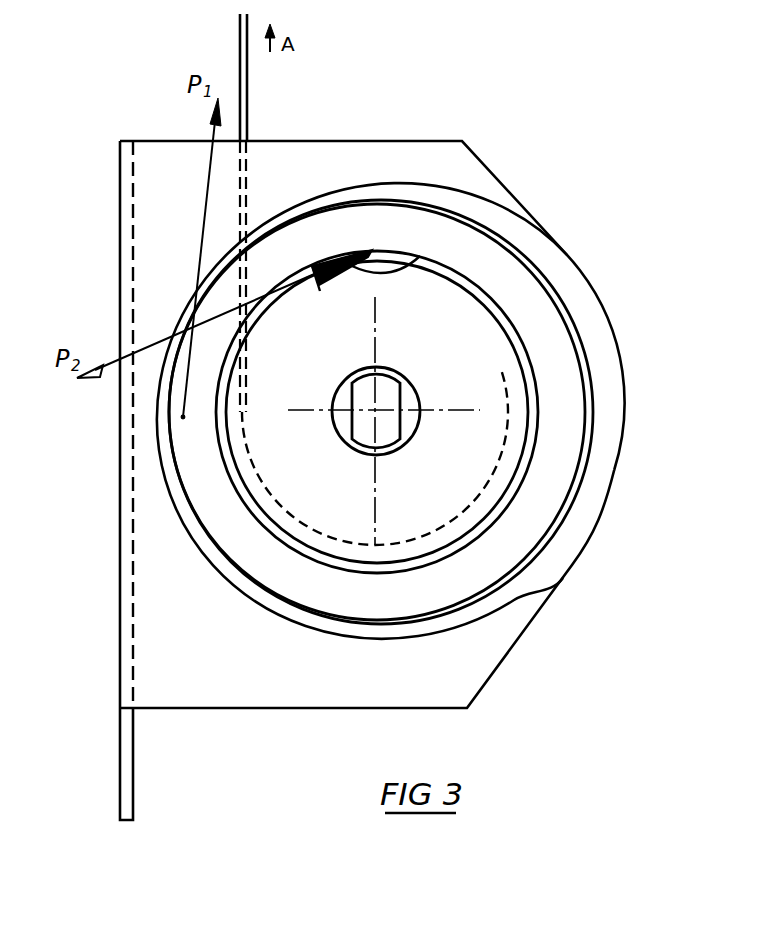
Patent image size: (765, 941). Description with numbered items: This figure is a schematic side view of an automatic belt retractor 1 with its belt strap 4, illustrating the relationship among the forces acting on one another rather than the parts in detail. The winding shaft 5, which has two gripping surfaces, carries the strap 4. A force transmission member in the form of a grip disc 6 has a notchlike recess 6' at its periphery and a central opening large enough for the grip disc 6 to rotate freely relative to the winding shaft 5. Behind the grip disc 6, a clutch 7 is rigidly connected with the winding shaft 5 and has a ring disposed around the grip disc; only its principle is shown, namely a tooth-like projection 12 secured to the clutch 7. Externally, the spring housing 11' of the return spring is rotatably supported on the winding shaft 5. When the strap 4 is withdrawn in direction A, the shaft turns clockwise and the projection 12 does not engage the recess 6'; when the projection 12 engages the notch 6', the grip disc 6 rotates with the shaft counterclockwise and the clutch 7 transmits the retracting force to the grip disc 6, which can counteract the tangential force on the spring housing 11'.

The automatic belt retractor 1 is at (463, 147).
The belt strap 4 is at (245, 114).
The winding shaft 5 is at (387, 408).
The grip disc 6 is at (436, 412).
The notchlike recess 6' is at (474, 219).
The clutch 7 is at (563, 443).
The spring housing 11' is at (422, 412).
The tooth-like projection 12 is at (347, 247).